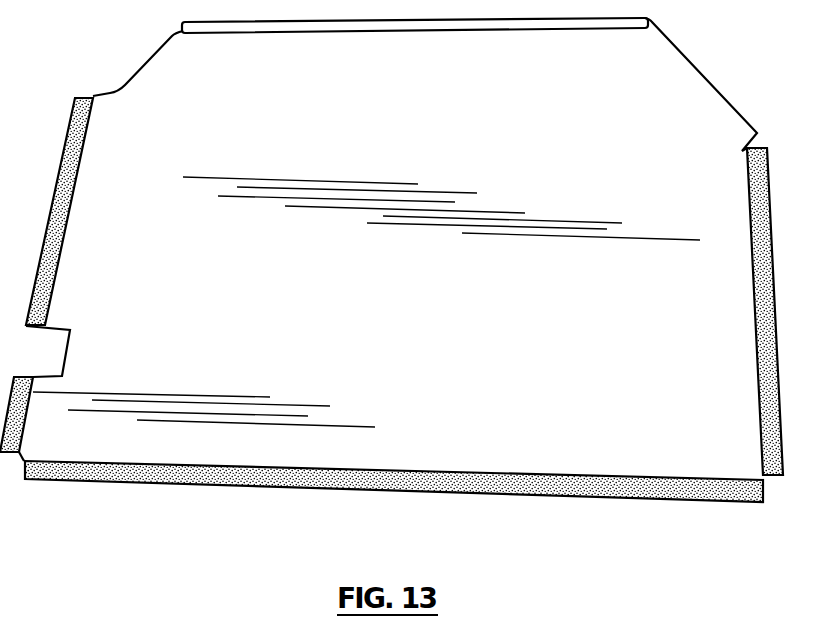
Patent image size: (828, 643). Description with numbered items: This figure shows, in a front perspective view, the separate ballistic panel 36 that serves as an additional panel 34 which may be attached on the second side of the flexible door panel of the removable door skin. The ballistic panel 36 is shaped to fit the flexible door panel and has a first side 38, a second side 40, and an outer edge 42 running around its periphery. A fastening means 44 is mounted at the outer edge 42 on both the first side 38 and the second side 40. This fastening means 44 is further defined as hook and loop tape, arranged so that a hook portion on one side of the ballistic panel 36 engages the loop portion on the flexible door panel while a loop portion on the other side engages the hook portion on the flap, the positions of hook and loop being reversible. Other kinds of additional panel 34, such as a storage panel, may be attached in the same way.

The additional panel 34 is at (622, 423).
The ballistic panel 36 is at (107, 442).
The first side 38 is at (159, 490).
The second side 40 is at (712, 273).
The outer edge 42 is at (753, 360).
The fastening means 44 is at (512, 482).